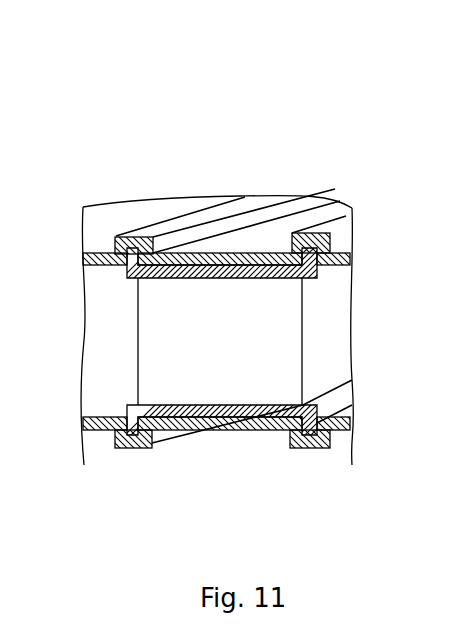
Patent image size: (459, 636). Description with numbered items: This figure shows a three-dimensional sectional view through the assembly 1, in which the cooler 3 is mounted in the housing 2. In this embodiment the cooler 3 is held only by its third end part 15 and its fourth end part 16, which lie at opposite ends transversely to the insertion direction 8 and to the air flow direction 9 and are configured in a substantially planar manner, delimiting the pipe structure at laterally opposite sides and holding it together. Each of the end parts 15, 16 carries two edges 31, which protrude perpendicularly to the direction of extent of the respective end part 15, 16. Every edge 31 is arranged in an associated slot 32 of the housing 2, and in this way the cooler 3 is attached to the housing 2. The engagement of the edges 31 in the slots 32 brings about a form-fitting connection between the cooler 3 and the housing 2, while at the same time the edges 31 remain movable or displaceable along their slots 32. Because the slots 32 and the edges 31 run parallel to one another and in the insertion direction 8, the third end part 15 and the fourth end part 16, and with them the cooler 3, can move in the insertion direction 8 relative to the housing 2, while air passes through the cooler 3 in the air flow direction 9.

The assembly 1 is at (130, 147).
The housing 2 is at (198, 207).
The cooler 3 is at (140, 369).
The insertion direction 8 is at (333, 320).
The air flow direction 9 is at (110, 342).
The third end part 15 is at (222, 257).
The fourth end part 16 is at (218, 418).
The edge 31 is at (150, 237).
The slot 32 is at (110, 253).